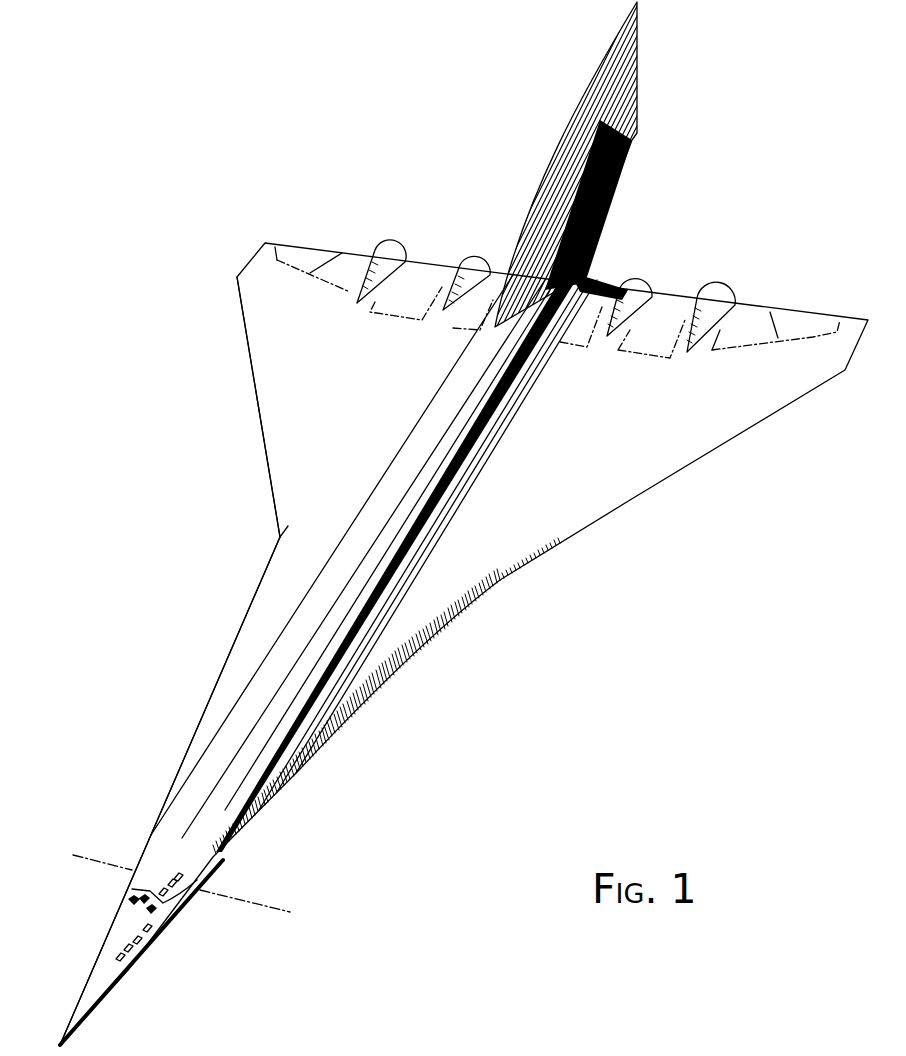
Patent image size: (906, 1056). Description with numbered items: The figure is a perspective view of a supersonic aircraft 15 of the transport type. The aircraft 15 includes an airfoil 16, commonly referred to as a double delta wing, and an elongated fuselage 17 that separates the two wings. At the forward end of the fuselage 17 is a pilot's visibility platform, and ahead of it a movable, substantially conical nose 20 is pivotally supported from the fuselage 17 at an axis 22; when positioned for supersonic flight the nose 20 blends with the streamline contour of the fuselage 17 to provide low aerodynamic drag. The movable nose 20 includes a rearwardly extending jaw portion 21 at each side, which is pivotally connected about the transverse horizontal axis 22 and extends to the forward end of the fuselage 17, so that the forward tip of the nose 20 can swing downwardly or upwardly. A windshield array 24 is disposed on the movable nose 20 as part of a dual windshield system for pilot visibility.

The supersonic aircraft 15 is at (198, 350).
The airfoil 16 is at (263, 487).
The fuselage 17 is at (193, 747).
The movable nose 20 is at (104, 1007).
The jaw portion 21 is at (193, 897).
The axis 22 is at (277, 909).
The windshield array 24 is at (116, 910).